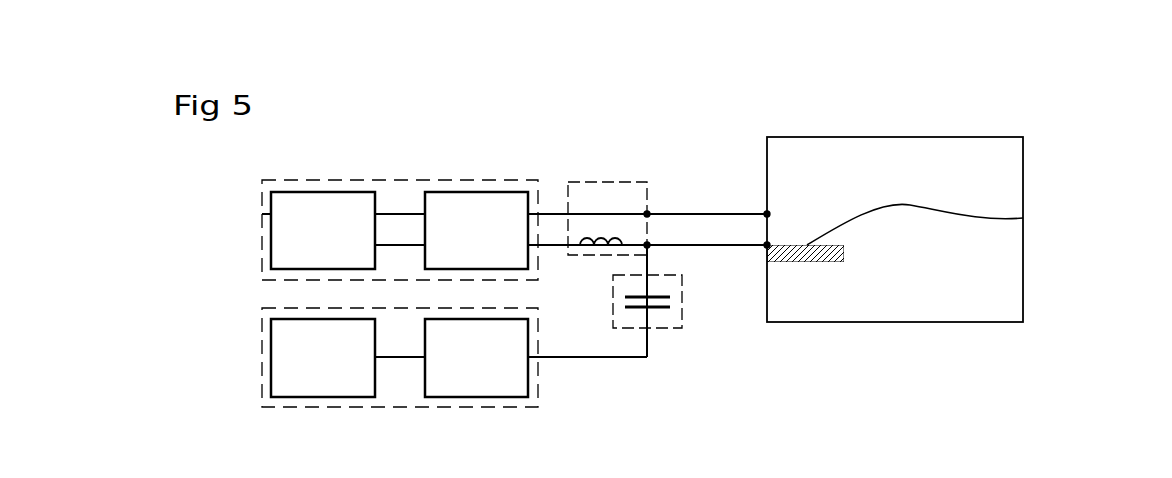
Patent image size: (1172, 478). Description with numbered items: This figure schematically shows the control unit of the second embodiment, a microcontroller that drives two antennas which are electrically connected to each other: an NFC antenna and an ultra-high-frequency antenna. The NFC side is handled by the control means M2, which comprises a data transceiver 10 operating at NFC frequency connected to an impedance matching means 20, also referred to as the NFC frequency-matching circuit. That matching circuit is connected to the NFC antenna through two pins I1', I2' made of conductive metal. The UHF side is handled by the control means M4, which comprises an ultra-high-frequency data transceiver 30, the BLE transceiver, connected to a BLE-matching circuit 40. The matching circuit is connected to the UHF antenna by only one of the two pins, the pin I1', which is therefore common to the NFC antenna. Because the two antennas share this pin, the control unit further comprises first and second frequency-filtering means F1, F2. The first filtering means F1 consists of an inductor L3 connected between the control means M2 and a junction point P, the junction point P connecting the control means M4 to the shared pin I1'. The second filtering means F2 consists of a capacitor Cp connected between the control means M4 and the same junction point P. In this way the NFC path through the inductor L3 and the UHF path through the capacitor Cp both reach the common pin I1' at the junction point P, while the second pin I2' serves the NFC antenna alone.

The data transceiver 10 is at (272, 243).
The control means M2 is at (262, 214).
The impedance matching means 20 is at (476, 192).
The first frequency-filtering means F1 is at (608, 182).
The inductor L3 is at (597, 238).
The second frequency-filtering means F2 is at (682, 328).
The capacitor Cp is at (626, 299).
The junction point P is at (650, 247).
The pin I2' is at (708, 179).
The pin I1' is at (708, 300).
The control means M4 is at (262, 375).
The ultra-high-frequency data transceiver 30 is at (322, 397).
The impedance-matching means 40 is at (476, 397).